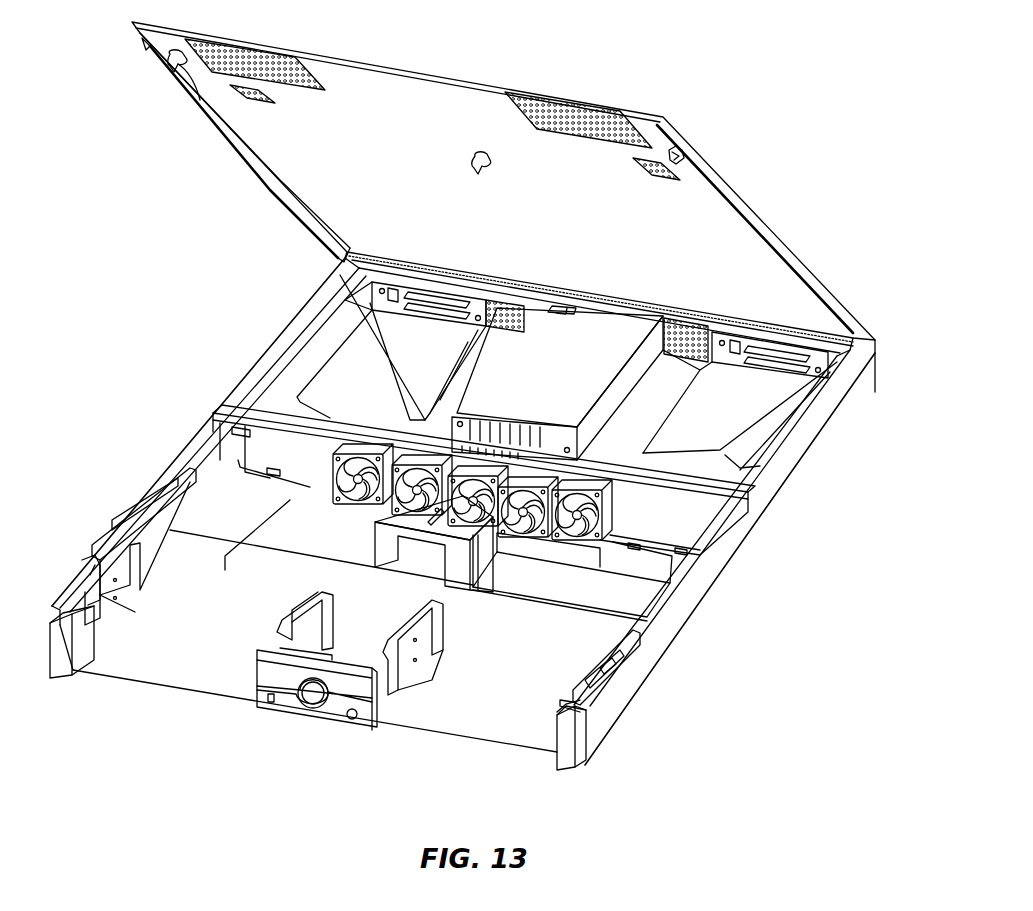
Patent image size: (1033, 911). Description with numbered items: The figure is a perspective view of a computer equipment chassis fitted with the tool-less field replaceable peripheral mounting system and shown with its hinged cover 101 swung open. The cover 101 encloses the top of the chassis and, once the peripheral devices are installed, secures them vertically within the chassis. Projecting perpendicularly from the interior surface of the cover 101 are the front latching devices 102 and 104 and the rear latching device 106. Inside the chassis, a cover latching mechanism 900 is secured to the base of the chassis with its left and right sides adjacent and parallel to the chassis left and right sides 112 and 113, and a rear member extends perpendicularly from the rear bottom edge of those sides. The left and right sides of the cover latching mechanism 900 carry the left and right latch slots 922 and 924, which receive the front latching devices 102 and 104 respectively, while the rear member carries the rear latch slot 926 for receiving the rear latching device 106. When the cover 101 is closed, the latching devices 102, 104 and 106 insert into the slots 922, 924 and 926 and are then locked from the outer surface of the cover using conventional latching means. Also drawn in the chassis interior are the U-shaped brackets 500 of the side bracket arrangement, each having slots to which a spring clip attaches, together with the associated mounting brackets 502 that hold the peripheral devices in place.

The cover 101 is at (420, 90).
The front latching device 102 is at (204, 112).
The front latching device 104 is at (682, 160).
The rear latching device 106 is at (484, 160).
The left side 112 is at (283, 341).
The right side 113 is at (743, 538).
The U-shaped bracket 500 is at (130, 593).
The mounting bracket 502 is at (291, 614).
The cover latching mechanism 900 is at (544, 586).
The left latch slot 922 is at (97, 559).
The right latch slot 924 is at (622, 657).
The rear latch slot 926 is at (440, 522).